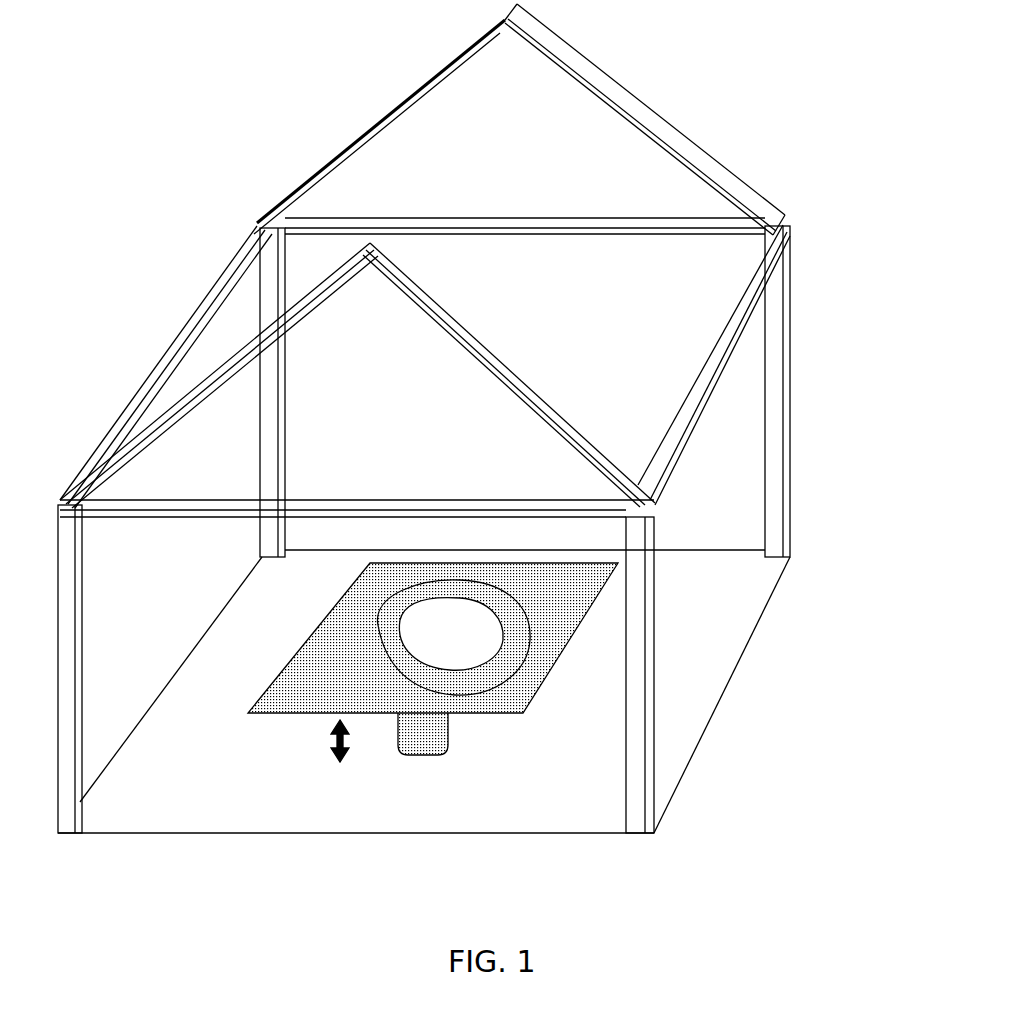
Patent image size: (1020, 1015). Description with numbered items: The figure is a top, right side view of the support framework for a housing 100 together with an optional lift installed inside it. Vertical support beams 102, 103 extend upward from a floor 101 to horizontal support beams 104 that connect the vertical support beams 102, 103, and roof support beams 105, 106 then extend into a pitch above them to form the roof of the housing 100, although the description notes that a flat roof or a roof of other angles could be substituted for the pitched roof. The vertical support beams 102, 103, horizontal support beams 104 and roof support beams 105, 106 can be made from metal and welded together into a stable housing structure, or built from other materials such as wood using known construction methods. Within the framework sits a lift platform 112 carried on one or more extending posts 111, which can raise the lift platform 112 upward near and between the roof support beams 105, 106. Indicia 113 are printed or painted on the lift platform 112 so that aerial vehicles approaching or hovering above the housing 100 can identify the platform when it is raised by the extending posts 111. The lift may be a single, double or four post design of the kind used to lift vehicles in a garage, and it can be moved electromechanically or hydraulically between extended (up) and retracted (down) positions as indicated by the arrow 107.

The housing 100 is at (152, 112).
The floor 101 is at (725, 640).
The vertical support beam 102 is at (80, 672).
The vertical support beam 103 is at (780, 345).
The horizontal support beam 104 is at (478, 218).
The roof support beam 105 is at (385, 128).
The roof support beam 106 is at (620, 102).
The arrow 107 is at (325, 744).
The extending post 111 is at (428, 748).
The lift platform 112 is at (483, 698).
The indicia 113 is at (378, 635).